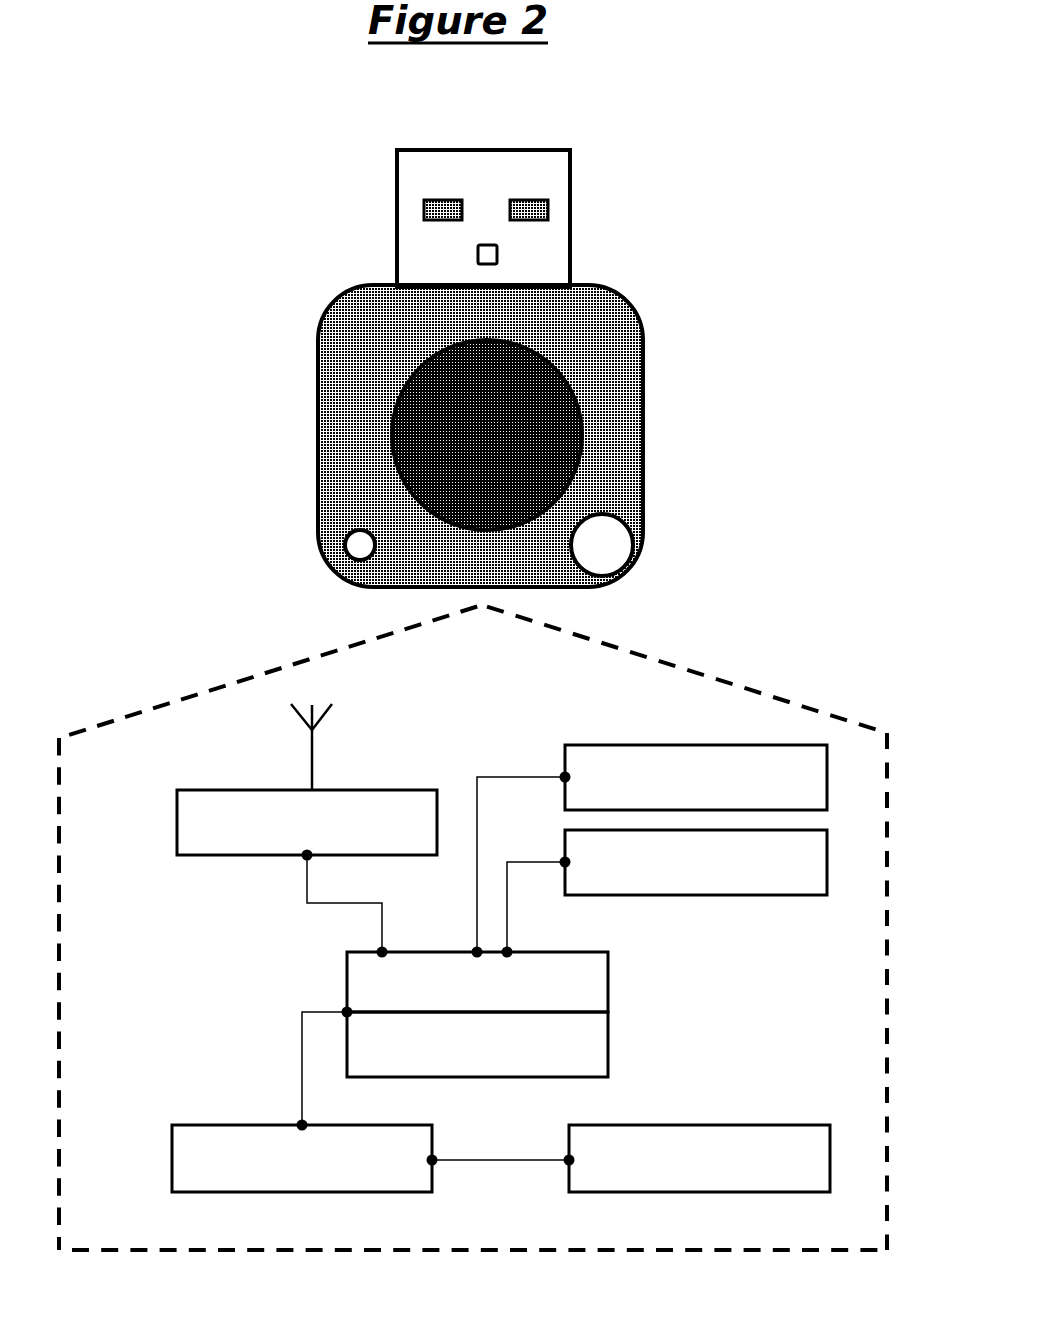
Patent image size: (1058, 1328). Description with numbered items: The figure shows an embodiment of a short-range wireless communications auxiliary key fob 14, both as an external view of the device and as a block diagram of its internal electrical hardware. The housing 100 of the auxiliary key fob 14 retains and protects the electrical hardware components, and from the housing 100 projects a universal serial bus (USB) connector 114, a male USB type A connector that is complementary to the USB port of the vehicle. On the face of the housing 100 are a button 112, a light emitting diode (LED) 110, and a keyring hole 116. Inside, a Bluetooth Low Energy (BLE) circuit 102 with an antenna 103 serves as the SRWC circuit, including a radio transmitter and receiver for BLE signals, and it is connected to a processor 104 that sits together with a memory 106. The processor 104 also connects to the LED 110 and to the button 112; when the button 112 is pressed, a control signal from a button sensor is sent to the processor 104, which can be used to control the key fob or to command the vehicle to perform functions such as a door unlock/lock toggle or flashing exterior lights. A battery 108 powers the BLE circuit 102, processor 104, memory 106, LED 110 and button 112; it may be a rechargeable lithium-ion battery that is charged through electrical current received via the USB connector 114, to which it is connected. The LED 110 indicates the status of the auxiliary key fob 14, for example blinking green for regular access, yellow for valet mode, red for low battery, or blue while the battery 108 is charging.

The auxiliary key fob 14 is at (748, 115).
The housing 100 is at (608, 340).
The Bluetooth Low Energy (BLE) circuit 102 is at (307, 871).
The antenna 103 is at (313, 742).
The processor 104 is at (477, 980).
The memory 106 is at (455, 1066).
The battery 108 is at (370, 1156).
The light emitting diode (LED) 110 is at (355, 547).
The button 112 is at (518, 425).
The universal serial bus (USB) connector 114 is at (558, 190).
The keyring hole 116 is at (605, 536).